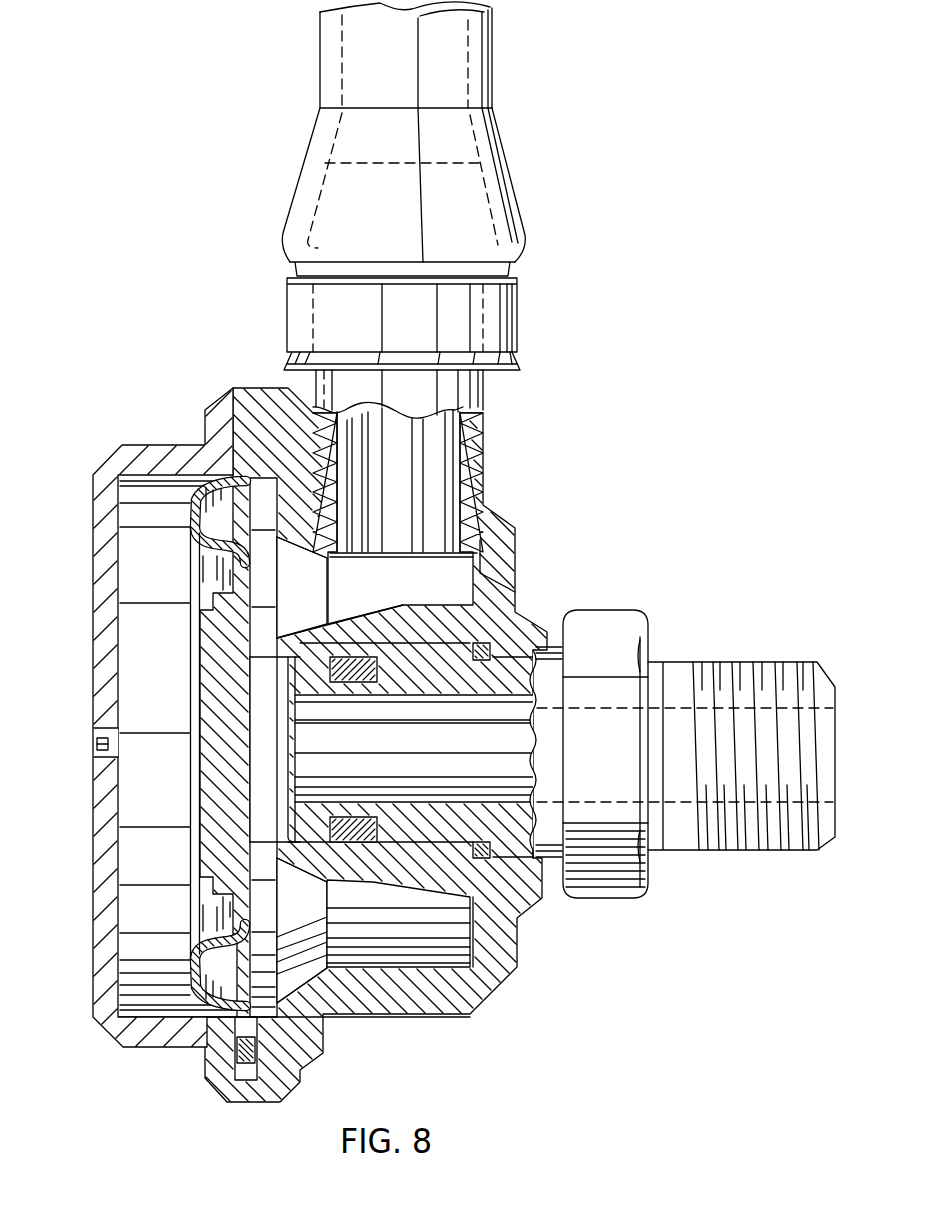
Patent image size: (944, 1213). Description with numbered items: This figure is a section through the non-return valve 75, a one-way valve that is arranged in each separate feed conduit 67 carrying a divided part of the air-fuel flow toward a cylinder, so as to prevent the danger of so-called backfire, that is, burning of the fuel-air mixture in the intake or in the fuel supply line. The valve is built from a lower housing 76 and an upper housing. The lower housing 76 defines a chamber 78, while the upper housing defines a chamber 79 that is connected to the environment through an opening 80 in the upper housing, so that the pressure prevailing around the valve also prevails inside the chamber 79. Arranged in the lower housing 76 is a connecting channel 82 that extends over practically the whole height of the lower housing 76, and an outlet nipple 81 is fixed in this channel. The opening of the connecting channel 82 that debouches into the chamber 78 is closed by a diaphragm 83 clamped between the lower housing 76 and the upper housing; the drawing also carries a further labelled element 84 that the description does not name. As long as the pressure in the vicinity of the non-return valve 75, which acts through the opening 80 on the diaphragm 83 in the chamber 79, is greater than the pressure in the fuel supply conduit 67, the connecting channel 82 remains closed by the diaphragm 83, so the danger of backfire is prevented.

The feed conduit 67 is at (483, 90).
The non-return valve 75 is at (210, 362).
The lower housing 76 is at (493, 541).
The chamber 78 is at (418, 930).
The chamber 79 is at (150, 580).
The opening 80 is at (95, 744).
The outlet nipple 81 is at (664, 651).
The connecting channel 82 is at (413, 631).
The diaphragm 83 is at (263, 768).
The diaphragm 84 is at (227, 678).